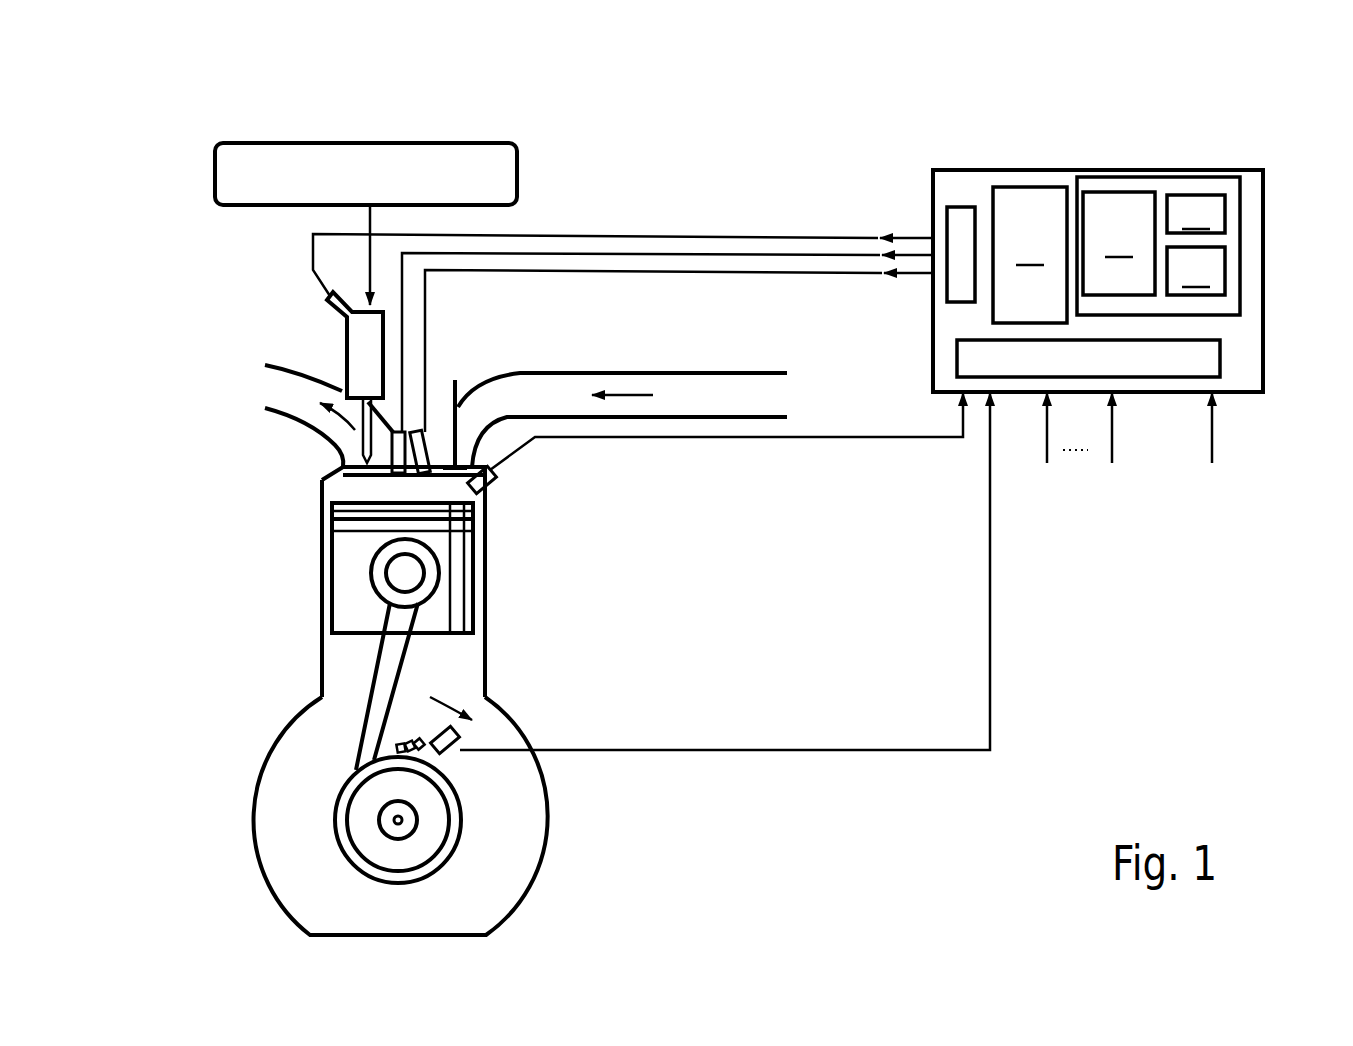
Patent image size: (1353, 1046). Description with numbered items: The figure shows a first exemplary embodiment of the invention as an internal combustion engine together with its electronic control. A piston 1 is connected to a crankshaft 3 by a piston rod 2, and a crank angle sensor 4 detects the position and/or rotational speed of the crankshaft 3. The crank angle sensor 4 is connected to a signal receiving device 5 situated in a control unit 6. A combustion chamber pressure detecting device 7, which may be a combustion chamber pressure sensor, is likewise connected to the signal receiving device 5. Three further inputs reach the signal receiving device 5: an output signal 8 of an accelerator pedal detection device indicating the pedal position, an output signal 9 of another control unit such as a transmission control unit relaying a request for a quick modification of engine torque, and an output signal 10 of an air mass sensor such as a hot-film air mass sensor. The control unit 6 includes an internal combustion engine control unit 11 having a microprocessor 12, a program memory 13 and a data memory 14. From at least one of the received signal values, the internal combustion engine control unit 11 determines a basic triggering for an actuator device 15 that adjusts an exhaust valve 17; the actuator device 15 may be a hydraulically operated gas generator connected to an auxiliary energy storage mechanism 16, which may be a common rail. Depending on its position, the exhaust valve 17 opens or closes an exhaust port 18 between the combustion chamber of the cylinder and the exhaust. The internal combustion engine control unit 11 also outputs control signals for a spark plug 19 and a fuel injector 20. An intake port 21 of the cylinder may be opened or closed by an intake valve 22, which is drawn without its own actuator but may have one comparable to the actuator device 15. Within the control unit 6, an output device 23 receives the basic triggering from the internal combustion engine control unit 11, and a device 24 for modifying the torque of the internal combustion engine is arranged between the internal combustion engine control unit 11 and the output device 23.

The piston 1 is at (473, 608).
The piston rod 2 is at (377, 690).
The crankshaft 3 is at (410, 825).
The crank angle sensor 4 is at (470, 760).
The signal receiving device 5 is at (1197, 360).
The control unit 6 is at (1265, 233).
The combustion chamber pressure detecting device 7 is at (497, 491).
The output signal of accelerator pedal detection device 8 is at (1047, 450).
The output signal of another control unit 9 is at (1112, 450).
The output signal of air mass sensor 10 is at (1212, 445).
The internal combustion engine control unit 11 is at (1153, 176).
The microprocessor 12 is at (1119, 243).
The program memory 13 is at (1196, 214).
The data memory 14 is at (1196, 271).
The actuator device 15 is at (303, 340).
The auxiliary energy storage mechanism 16 is at (426, 140).
The exhaust valve 17 is at (362, 481).
The exhaust port 18 is at (270, 388).
The spark plug 19 is at (395, 480).
The fuel injector 20 is at (431, 424).
The intake port 21 is at (705, 390).
The intake valve 22 is at (470, 416).
The output device 23 is at (960, 232).
The device for modifying the torque of the internal combustion engine 24 is at (1030, 255).